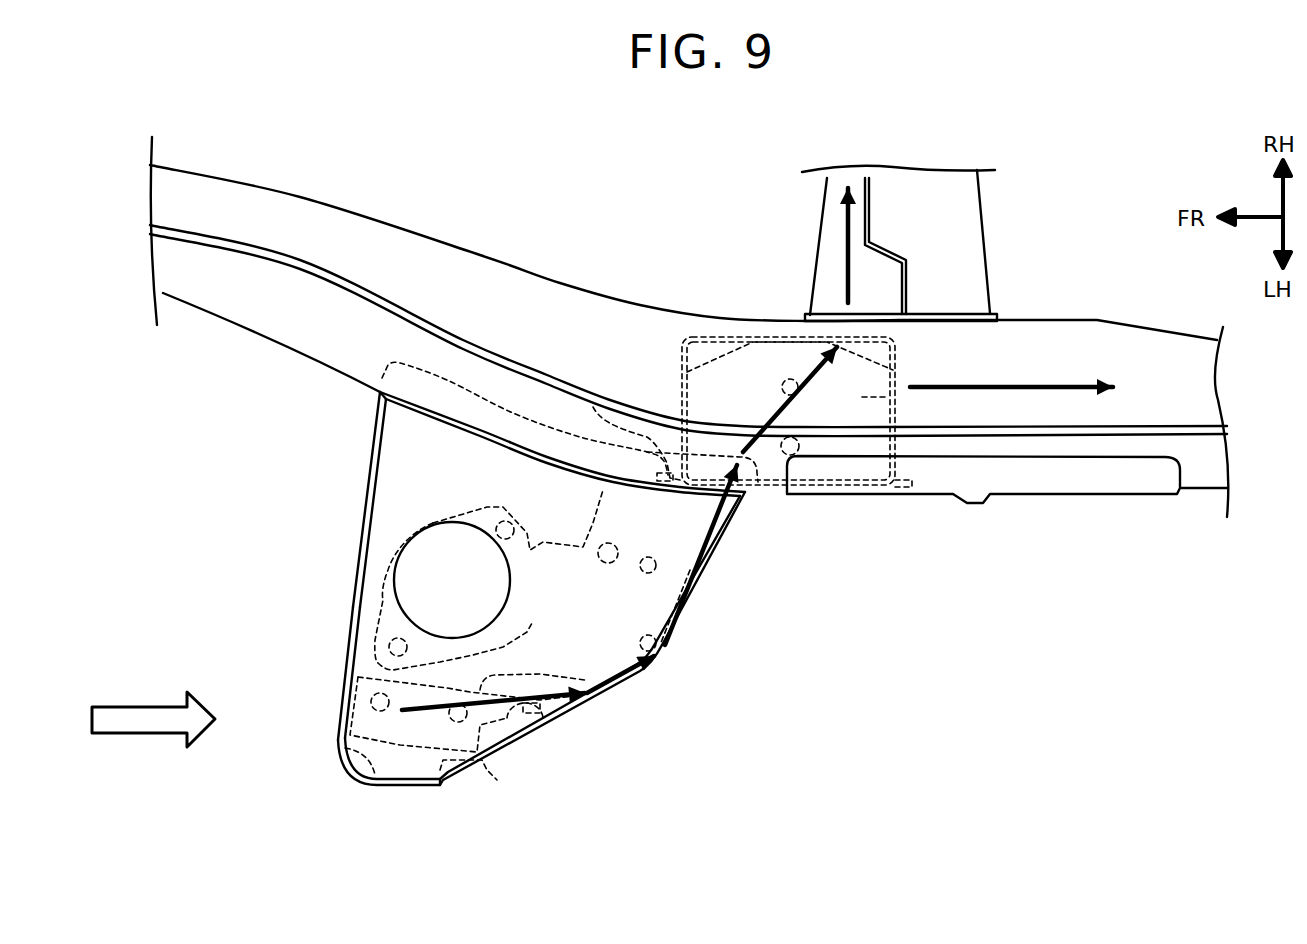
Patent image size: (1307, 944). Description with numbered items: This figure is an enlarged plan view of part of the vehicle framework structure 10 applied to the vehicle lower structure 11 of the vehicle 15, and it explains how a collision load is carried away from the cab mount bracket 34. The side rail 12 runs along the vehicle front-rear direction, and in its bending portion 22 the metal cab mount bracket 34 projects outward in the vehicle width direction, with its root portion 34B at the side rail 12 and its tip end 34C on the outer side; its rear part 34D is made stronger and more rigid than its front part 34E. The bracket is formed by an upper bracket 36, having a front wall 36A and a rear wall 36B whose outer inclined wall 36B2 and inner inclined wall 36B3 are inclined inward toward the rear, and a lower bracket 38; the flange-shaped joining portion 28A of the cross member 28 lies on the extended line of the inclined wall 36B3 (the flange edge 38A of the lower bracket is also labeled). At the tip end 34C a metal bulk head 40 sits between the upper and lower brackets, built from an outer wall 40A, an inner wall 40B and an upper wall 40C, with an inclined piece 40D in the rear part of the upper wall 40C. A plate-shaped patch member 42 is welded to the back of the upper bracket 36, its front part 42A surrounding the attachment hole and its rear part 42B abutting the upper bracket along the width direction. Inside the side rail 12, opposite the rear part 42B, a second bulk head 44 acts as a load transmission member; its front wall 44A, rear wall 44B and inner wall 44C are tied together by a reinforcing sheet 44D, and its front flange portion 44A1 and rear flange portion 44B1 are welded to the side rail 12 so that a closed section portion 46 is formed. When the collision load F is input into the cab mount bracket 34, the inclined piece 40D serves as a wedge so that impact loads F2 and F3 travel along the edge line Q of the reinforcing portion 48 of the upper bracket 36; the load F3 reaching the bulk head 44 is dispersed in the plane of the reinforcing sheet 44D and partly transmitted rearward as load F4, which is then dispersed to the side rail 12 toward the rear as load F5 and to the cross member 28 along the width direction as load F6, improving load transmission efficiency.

The vehicle framework structure 10 is at (772, 777).
The vehicle lower structure 11 is at (948, 734).
The vehicle 15 is at (994, 760).
The side rail 12 is at (1058, 499).
The bending portion 22 is at (202, 293).
The cross member 28 is at (935, 243).
The joining portion 28A is at (930, 313).
The cab mount bracket 34 is at (524, 629).
The root portion 34B is at (376, 401).
The tip end 34C is at (461, 800).
The rear part 34D is at (722, 550).
The front part 34E is at (348, 639).
The upper bracket 36 is at (560, 720).
The front wall 36A is at (355, 606).
The rear wall 36B is at (672, 640).
The inclined wall 36B2 is at (580, 707).
The inclined wall 36B3 is at (693, 612).
The lower bracket 38 is at (519, 750).
The flange edge 38A is at (343, 688).
The bulk head 40 is at (358, 742).
The outer wall 40A is at (363, 770).
The inner wall 40B is at (537, 673).
The upper wall 40C is at (507, 648).
The inclined piece 40D is at (497, 780).
The patch member 42 is at (710, 563).
The front part 42A is at (435, 523).
The rear part 42B is at (573, 525).
The bulk head 44 is at (708, 333).
The front wall 44A is at (680, 378).
The front flange portion 44A1 is at (593, 407).
The rear wall 44B is at (897, 377).
The rear flange portion 44B1 is at (902, 487).
The inner wall 44C is at (753, 337).
The reinforcing sheet 44D is at (838, 443).
The closed section portion 46 is at (860, 398).
The reinforcing portion 48 is at (673, 650).
The collision load F is at (143, 727).
The impact load F2 is at (605, 670).
The collision load F3 is at (690, 572).
The collision load F4 is at (782, 390).
The collision load F5 is at (1033, 385).
The collision load F6 is at (846, 253).
The edge line Q is at (737, 495).